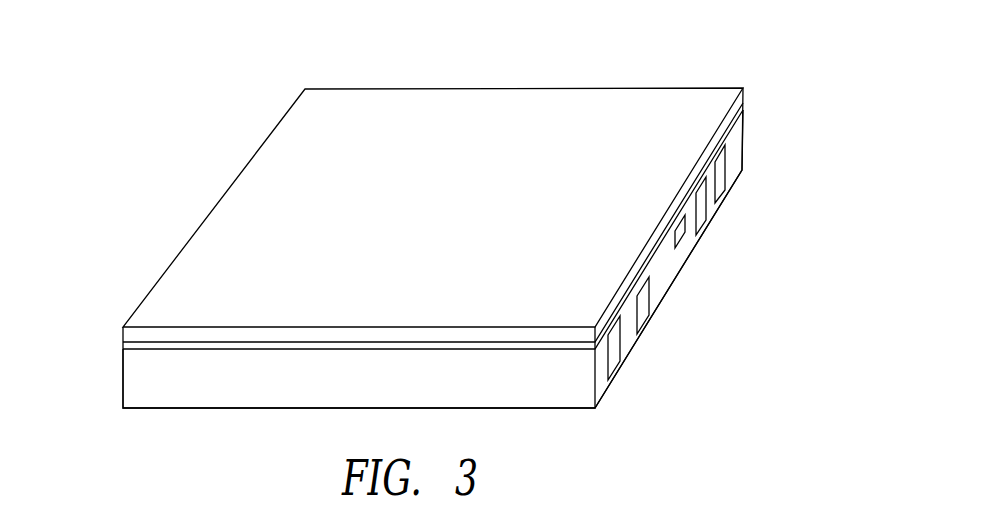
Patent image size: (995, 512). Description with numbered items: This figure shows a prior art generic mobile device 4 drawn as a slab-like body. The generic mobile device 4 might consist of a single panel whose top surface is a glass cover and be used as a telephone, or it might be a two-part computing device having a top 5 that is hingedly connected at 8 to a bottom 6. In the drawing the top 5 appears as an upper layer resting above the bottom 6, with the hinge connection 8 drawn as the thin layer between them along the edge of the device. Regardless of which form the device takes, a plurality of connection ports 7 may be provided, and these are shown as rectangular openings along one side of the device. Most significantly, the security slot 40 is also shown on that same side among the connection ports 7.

The generic mobile device 4 is at (433, 212).
The top 5 is at (130, 337).
The bottom 6 is at (123, 395).
The connection ports 7 is at (683, 240).
The hinge connection 8 is at (162, 346).
The security slot 40 is at (613, 370).